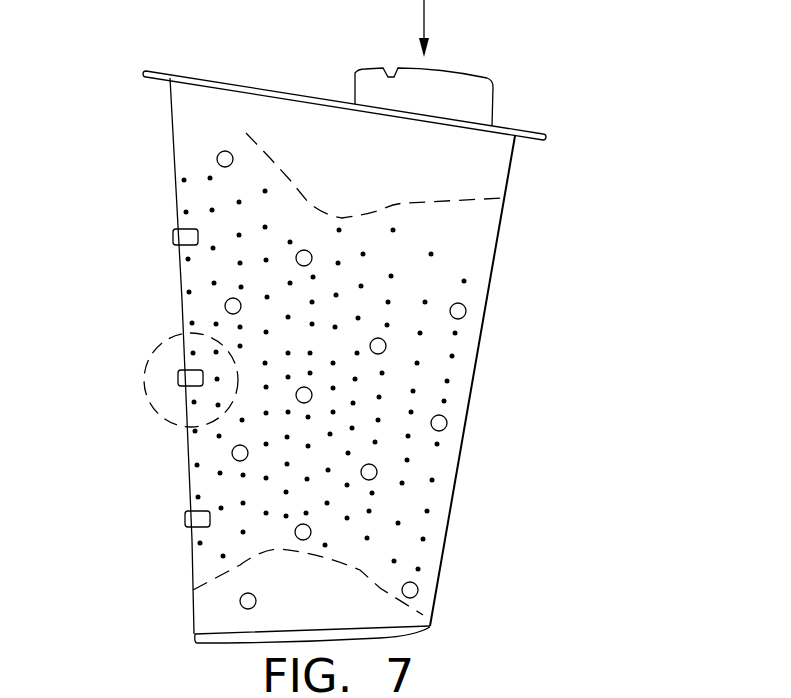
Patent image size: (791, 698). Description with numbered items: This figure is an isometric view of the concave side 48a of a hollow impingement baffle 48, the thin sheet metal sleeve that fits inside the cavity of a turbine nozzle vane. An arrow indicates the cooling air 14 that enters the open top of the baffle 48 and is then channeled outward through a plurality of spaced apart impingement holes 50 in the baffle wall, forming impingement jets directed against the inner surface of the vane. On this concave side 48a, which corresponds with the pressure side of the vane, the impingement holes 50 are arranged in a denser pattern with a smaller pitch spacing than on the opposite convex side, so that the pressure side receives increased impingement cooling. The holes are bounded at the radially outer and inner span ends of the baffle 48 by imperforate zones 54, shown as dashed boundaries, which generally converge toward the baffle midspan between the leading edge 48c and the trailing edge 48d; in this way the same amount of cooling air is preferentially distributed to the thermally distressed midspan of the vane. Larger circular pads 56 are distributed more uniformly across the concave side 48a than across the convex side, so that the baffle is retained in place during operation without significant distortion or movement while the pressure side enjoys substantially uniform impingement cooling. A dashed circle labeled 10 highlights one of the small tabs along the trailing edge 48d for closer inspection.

The fastening detail (clip region) 10 is at (167, 340).
The cooling air 14 is at (423, 12).
The impingement baffle 48 is at (334, 355).
The concave side 48a is at (453, 249).
The leading edge 48c is at (453, 502).
The trailing edge 48d is at (187, 482).
The impingement holes 50 is at (398, 523).
The imperforate zones 54 is at (394, 184).
The pads 56 is at (447, 421).